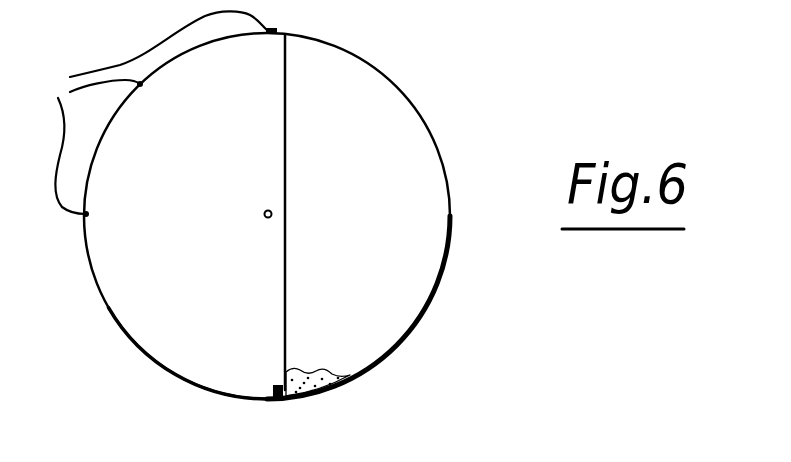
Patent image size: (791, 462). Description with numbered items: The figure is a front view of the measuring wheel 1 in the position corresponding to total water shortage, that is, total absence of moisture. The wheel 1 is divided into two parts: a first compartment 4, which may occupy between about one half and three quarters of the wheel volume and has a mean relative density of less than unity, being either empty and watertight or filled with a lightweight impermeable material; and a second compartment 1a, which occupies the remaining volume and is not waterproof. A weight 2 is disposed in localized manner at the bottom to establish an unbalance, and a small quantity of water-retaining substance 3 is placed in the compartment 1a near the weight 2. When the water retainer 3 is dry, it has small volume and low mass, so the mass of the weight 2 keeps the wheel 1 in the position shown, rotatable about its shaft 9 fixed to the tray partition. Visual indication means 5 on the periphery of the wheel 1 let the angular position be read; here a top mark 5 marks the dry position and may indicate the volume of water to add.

The measuring wheel 1 is at (446, 291).
The second compartment 1a is at (367, 120).
The weight 2 is at (277, 398).
The water-retaining substance 3 is at (327, 370).
The first compartment 4 is at (132, 278).
The visual indication means 5 is at (162, 114).
The shaft 9 is at (272, 212).